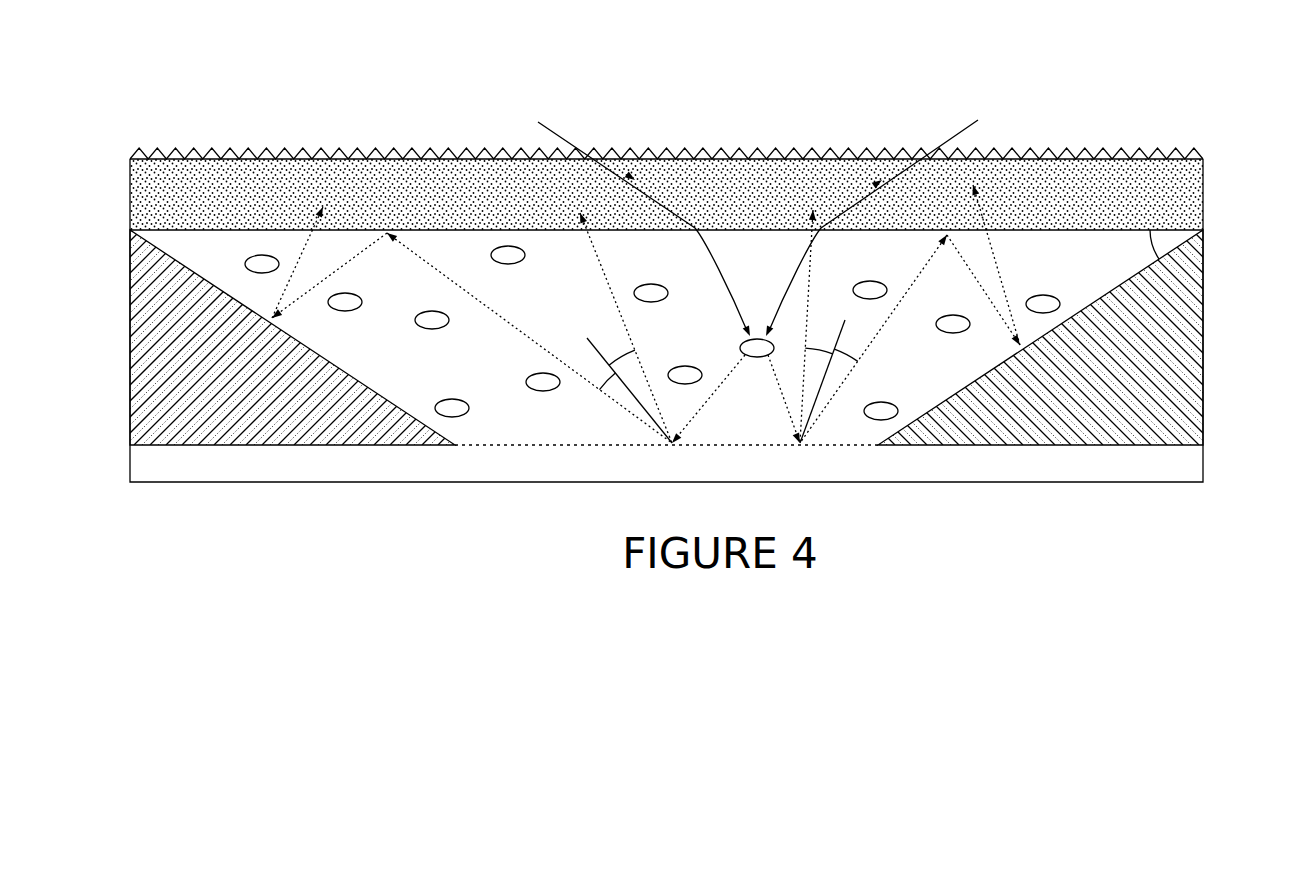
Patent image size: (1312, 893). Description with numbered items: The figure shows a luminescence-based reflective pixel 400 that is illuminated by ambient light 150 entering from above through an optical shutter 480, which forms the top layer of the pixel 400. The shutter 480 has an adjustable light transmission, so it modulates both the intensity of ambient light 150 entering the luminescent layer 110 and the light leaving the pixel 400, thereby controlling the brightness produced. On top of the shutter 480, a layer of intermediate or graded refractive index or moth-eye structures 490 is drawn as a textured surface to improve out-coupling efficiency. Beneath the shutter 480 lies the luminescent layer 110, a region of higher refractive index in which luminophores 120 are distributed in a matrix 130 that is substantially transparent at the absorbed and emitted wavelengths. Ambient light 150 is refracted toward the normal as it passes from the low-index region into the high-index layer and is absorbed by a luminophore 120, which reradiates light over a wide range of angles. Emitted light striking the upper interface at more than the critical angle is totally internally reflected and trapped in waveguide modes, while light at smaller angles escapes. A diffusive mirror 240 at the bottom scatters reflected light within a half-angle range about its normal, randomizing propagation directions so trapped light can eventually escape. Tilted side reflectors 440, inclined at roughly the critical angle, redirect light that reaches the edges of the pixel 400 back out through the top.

The luminescence-based reflective pixel 400 is at (360, 65).
The luminescent layer 110 is at (1215, 305).
The optical shutter 480 is at (1170, 207).
The moth-eye structures 490 is at (1210, 150).
The side reflectors 440 is at (225, 396).
The diffusive mirror 240 is at (1193, 465).
The matrix 130 is at (500, 384).
The luminophores 120 is at (742, 348).
The ambient light 150 is at (575, 140).